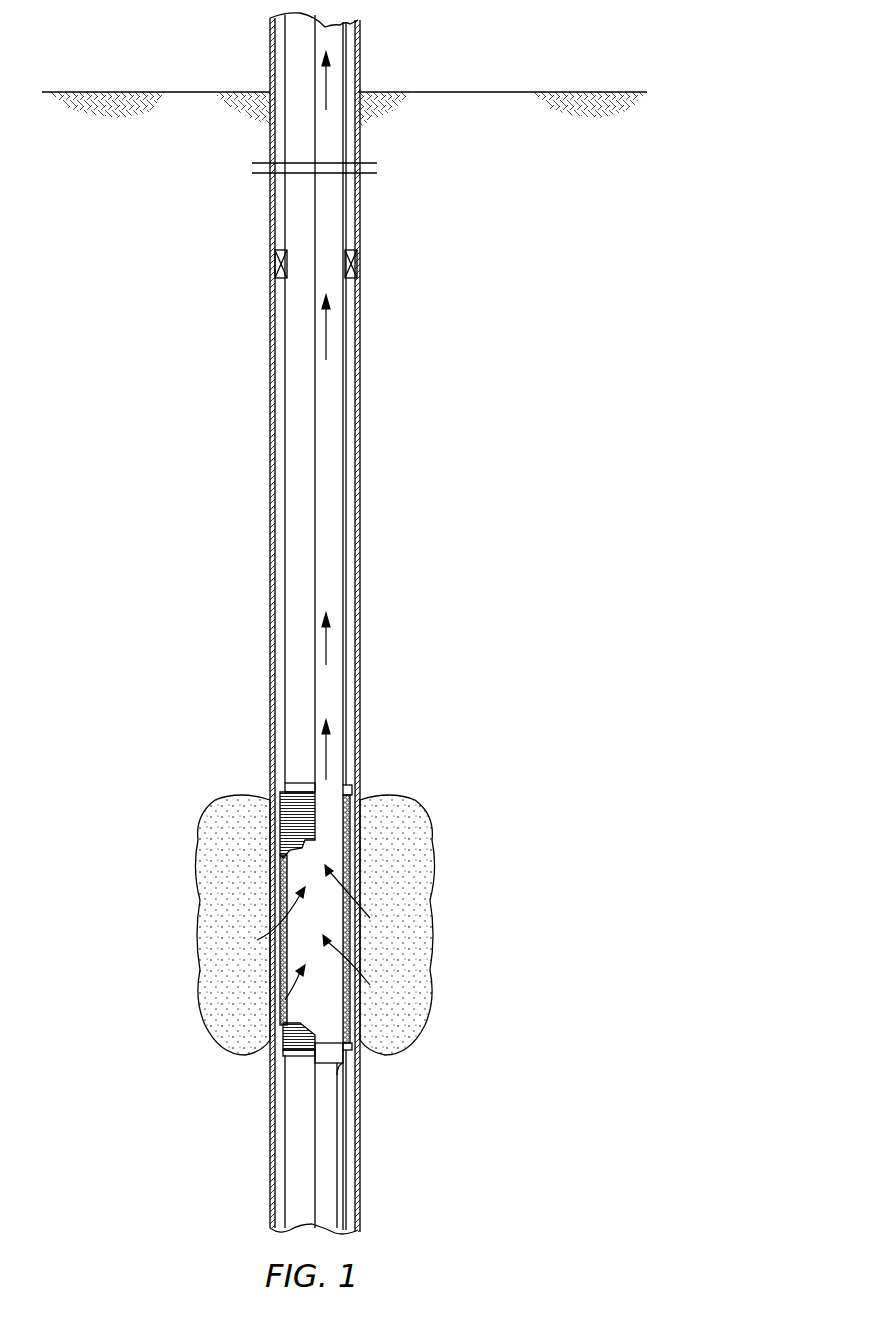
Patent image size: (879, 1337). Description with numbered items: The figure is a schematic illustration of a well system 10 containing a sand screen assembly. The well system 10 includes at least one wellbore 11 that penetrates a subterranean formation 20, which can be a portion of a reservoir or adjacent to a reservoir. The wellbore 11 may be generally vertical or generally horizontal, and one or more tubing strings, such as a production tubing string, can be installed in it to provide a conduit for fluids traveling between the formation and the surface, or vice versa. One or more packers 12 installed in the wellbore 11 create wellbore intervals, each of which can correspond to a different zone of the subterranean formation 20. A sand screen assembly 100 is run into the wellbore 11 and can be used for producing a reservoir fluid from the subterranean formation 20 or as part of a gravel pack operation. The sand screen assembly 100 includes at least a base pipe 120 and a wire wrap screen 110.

The well system 10 is at (246, 362).
The wellbore 11 is at (358, 465).
The packer 12 is at (357, 258).
The subterranean formation 20 is at (551, 157).
The sand screen assembly 100 is at (153, 847).
The wire wrap screen 110 is at (283, 803).
The base pipe 120 is at (285, 463).